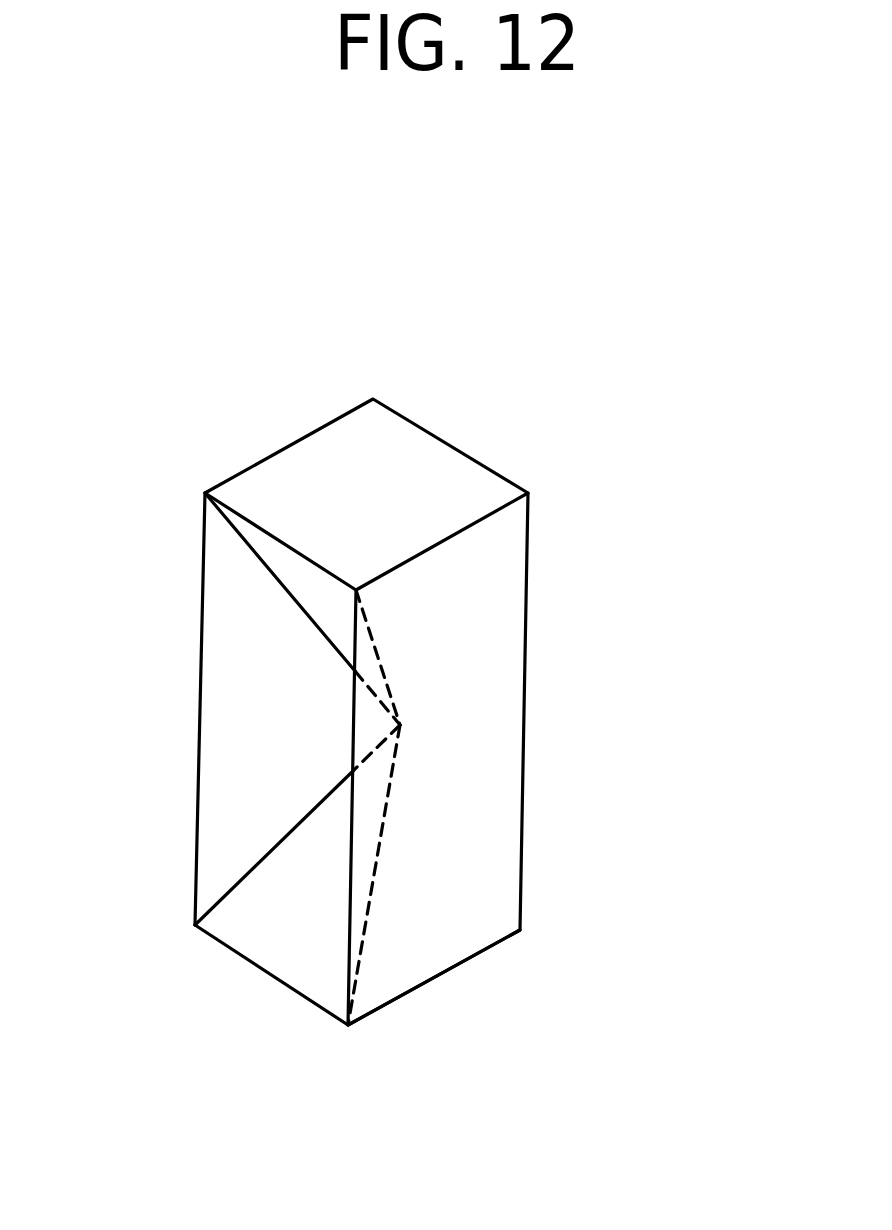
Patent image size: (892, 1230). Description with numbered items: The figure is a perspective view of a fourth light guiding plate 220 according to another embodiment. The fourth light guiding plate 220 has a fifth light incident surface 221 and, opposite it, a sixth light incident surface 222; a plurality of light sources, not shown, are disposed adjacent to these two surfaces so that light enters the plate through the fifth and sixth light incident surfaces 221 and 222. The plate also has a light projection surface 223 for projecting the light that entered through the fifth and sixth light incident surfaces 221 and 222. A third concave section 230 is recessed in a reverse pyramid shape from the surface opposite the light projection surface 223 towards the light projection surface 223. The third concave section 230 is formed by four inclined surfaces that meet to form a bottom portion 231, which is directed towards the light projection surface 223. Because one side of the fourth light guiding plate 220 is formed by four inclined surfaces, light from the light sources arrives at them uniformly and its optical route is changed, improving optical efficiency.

The fourth light guiding plate 220 is at (612, 336).
The fifth light incident surface 221 is at (313, 462).
The sixth light incident surface 222 is at (447, 968).
The light projection surface 223 is at (523, 853).
The third concave section 230 is at (238, 752).
The bottom portion 231 is at (400, 725).